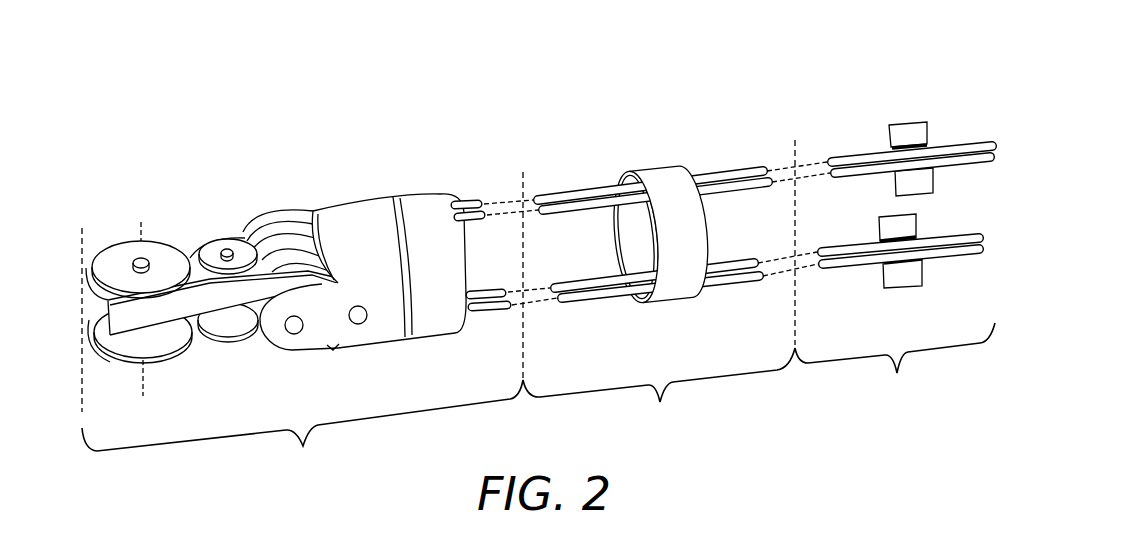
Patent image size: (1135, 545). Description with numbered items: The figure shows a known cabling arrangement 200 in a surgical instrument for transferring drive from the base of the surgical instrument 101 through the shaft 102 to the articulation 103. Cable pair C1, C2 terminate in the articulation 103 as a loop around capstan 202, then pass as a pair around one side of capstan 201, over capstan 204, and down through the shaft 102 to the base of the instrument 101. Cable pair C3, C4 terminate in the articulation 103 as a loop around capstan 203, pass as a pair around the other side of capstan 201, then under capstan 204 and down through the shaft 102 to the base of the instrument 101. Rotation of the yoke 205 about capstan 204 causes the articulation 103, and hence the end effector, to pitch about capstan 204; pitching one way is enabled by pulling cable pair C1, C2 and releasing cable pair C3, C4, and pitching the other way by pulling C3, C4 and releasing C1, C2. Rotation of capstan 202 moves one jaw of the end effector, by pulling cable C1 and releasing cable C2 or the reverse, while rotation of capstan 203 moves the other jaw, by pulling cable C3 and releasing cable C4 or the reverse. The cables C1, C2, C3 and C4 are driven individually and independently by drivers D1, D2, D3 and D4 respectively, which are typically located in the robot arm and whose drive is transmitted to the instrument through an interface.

The cabling arrangement 200 is at (669, 93).
The base of the surgical instrument 101 is at (895, 362).
The shaft 102 is at (659, 390).
The articulation 103 is at (302, 427).
The capstan 201 is at (227, 249).
The capstan 202 is at (142, 262).
The capstan 203 is at (158, 350).
The capstan 204 is at (294, 334).
The yoke 205 is at (229, 320).
The cable C1 is at (567, 283).
The cable C2 is at (578, 303).
The cable C3 is at (569, 193).
The cable C4 is at (579, 209).
The driver D1 is at (887, 226).
The driver D2 is at (906, 282).
The driver D3 is at (905, 132).
The driver D4 is at (930, 184).